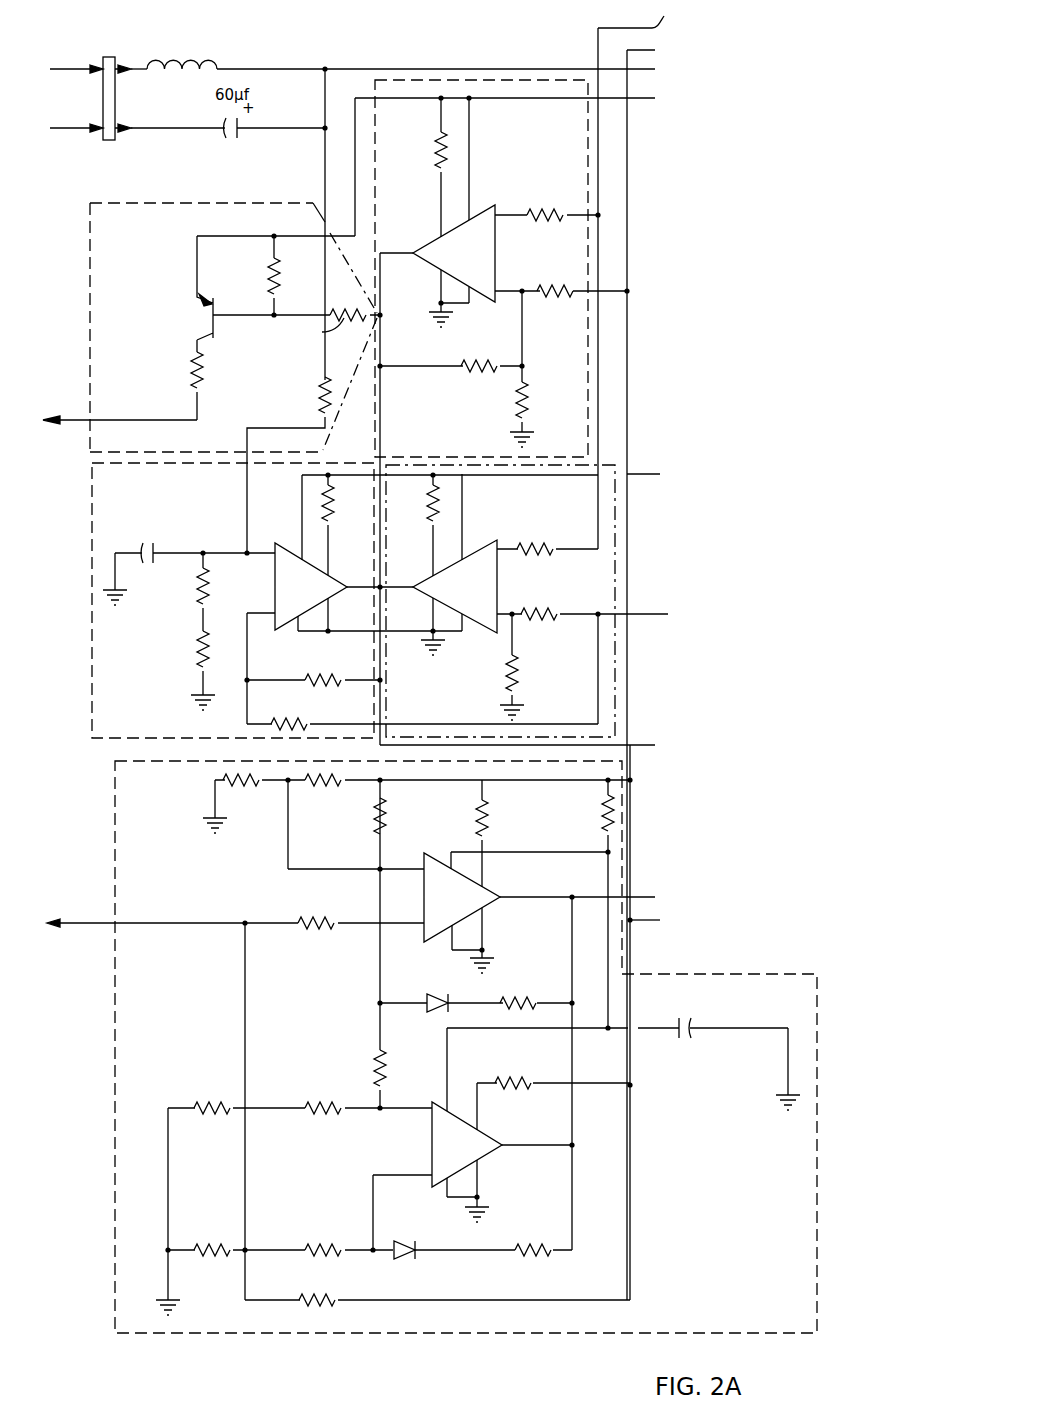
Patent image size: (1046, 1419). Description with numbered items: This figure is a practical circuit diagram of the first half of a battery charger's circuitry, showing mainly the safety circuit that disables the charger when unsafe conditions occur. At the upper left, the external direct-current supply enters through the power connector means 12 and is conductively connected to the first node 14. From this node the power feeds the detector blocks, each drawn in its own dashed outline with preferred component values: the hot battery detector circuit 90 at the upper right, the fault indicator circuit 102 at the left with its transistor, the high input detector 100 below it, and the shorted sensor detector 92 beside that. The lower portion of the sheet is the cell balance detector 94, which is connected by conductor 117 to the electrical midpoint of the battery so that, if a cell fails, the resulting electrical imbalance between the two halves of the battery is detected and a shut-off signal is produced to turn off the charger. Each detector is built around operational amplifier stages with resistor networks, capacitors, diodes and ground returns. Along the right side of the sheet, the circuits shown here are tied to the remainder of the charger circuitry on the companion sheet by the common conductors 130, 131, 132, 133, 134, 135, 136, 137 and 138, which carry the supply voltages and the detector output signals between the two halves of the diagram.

The power connector means 12 is at (115, 57).
The first node 14 is at (325, 69).
The hot battery detector circuit 90 is at (375, 88).
The shorted sensor detector 92 is at (615, 713).
The cell balance detector 94 is at (816, 1172).
The high input detector 100 is at (92, 496).
The fault indicator circuit 102 is at (90, 288).
The conductor 117 is at (78, 922).
The common conductor 130 is at (651, 274).
The common conductor 131 is at (655, 50).
The common conductor 132 is at (655, 69).
The common conductor 133 is at (655, 98).
The common conductor 134 is at (660, 474).
The common conductor 135 is at (682, 632).
The common conductor 136 is at (655, 745).
The common conductor 137 is at (655, 897).
The common conductor 138 is at (660, 920).